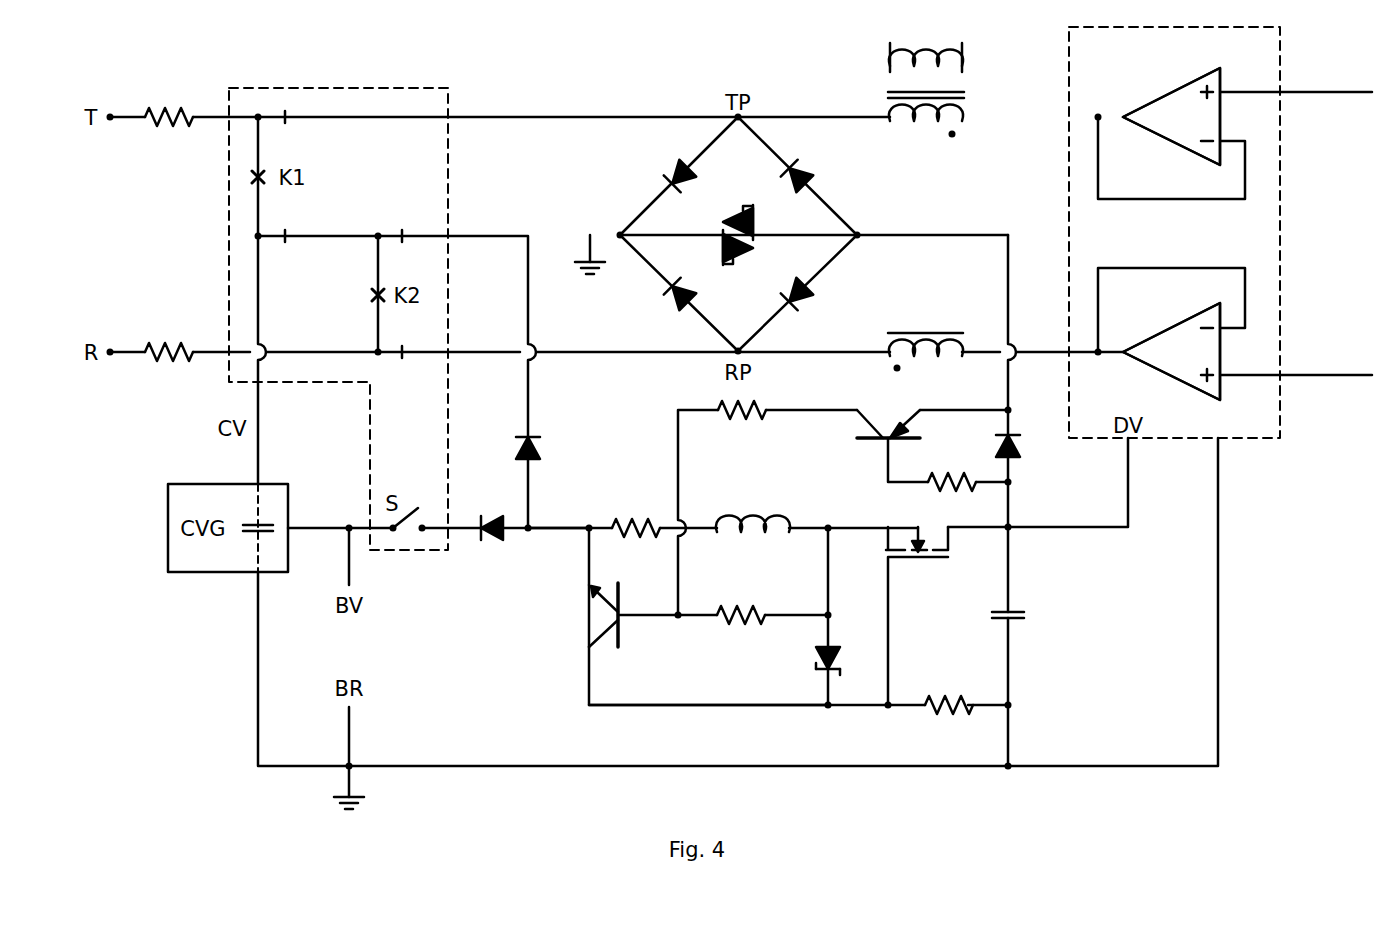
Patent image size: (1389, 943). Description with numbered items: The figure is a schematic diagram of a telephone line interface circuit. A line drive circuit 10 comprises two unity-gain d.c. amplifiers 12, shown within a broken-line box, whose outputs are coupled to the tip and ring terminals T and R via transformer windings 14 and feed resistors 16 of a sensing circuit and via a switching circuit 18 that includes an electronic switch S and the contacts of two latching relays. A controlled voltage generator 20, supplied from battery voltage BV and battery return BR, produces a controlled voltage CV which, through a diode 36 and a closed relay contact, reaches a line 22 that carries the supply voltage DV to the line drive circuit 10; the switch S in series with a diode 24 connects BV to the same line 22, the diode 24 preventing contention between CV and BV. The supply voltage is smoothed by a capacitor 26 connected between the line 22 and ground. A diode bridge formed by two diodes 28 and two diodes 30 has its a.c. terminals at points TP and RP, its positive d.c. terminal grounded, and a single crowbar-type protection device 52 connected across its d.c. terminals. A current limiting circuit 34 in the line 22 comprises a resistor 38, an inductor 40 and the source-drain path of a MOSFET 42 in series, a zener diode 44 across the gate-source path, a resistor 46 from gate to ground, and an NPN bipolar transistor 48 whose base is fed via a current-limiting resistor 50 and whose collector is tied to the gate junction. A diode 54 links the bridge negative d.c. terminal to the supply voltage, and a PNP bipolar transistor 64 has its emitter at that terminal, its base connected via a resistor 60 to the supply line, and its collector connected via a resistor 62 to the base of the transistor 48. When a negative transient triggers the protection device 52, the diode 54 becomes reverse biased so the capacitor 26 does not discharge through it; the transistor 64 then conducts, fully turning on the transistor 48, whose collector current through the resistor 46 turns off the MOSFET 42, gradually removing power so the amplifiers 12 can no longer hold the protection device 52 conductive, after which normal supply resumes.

The line drive circuit 10 is at (1280, 63).
The unity-gain d.c. amplifier 12 is at (1168, 362).
The transformer winding 14 is at (918, 312).
The feed resistor 16 is at (163, 128).
The switching circuit 18 is at (447, 190).
The controlled voltage generator 20 is at (173, 500).
The line 22 is at (548, 530).
The diode 24 is at (490, 545).
The capacitor 26 is at (1027, 612).
The diode 28 is at (668, 300).
The diode 30 is at (806, 300).
The current limiting circuit 34 is at (563, 681).
The diode 36 is at (541, 445).
The resistor 38 is at (628, 516).
The inductor 40 is at (758, 514).
The MOSFET 42 is at (928, 565).
The zener diode 44 is at (812, 658).
The resistor 46 is at (946, 693).
The NPN bipolar transistor 48 is at (625, 628).
The current-limiting resistor 50 is at (752, 605).
The crowbar-type protection device 52 is at (724, 203).
The diode 54 is at (1022, 445).
The resistor 60 is at (946, 476).
The resistor 62 is at (730, 420).
The PNP bipolar transistor 64 is at (870, 450).